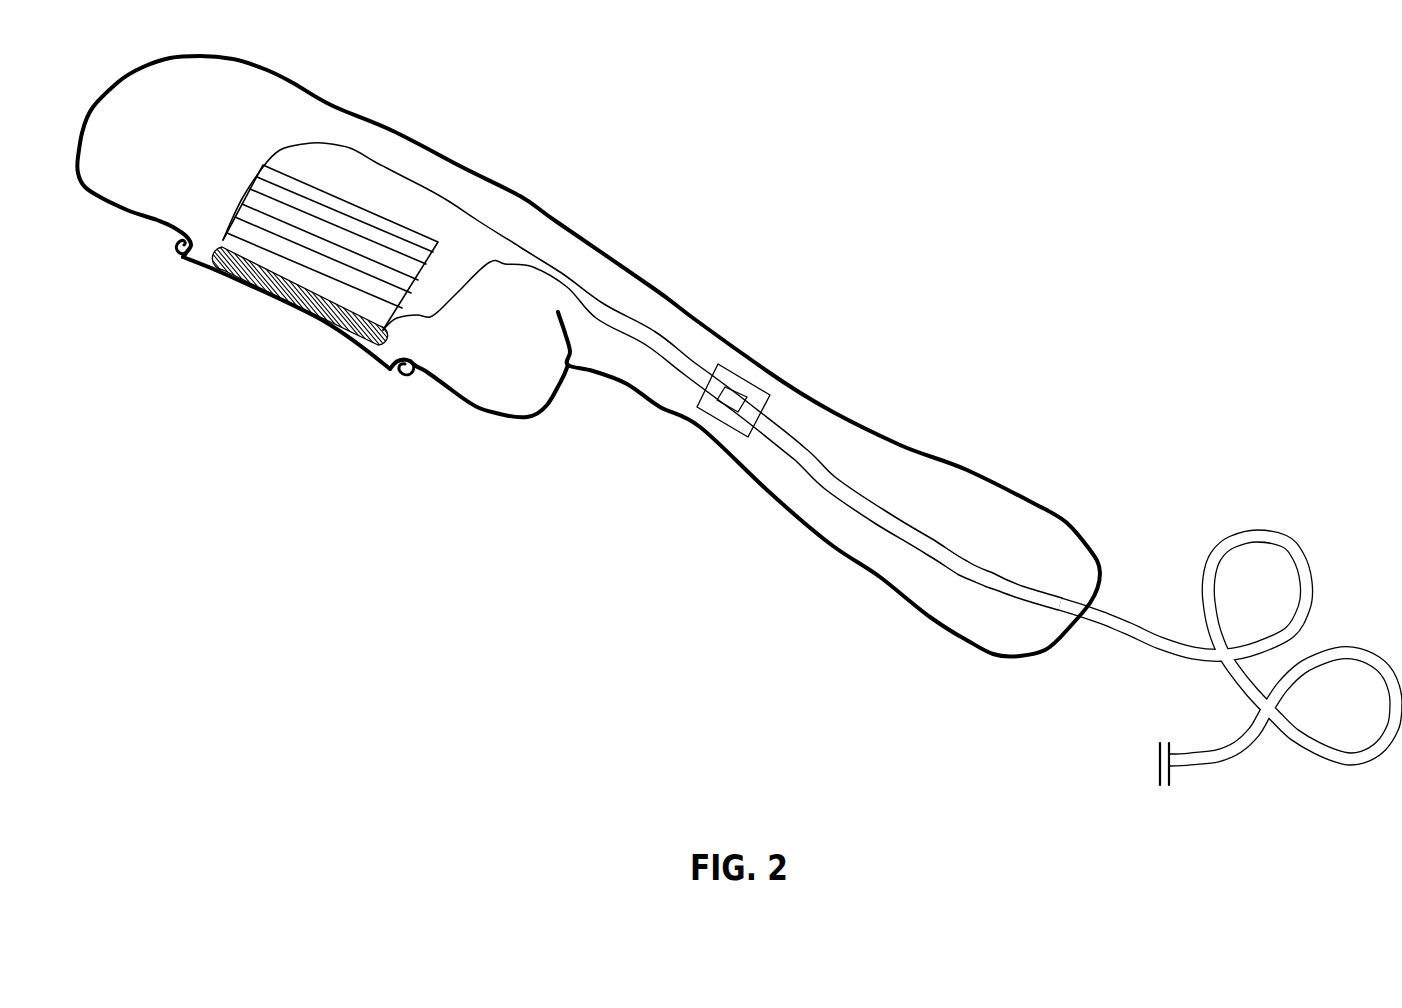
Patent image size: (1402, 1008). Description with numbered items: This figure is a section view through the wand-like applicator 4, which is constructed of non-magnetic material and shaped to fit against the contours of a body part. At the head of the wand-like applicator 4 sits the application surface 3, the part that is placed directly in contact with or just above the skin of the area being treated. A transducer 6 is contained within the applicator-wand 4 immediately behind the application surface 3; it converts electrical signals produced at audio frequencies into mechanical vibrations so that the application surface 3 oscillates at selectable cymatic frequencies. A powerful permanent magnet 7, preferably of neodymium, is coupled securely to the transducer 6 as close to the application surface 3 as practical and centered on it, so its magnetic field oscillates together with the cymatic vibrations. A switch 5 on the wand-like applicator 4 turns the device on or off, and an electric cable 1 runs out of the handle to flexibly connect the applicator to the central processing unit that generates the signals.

The electric cable 1 is at (1150, 642).
The application surface 3 is at (213, 274).
The wand-like applicator 4 is at (163, 141).
The switch 5 is at (743, 388).
The transducer 6 is at (365, 212).
The permanent magnet 7 is at (388, 342).